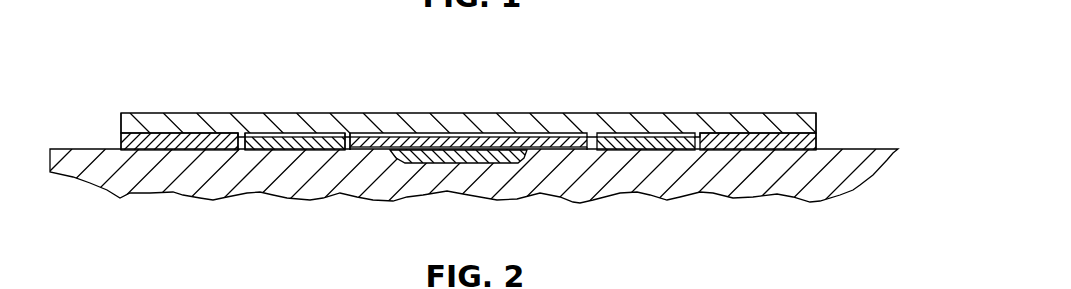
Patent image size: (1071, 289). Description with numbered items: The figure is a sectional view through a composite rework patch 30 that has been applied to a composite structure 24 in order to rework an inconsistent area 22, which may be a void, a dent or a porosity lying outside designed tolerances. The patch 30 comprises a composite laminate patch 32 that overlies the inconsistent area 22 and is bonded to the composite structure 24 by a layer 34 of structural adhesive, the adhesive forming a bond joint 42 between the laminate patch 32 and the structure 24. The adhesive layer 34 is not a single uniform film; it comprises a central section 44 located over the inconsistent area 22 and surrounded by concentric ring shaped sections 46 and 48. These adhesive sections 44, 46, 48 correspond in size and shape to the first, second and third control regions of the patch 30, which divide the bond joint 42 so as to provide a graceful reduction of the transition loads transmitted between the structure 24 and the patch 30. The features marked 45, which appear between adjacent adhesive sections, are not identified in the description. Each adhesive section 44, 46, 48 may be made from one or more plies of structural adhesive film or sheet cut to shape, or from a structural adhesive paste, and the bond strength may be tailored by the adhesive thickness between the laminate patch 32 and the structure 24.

The composite rework patch 30 is at (471, 77).
The composite laminate patch 32 is at (165, 128).
The bond joint 42 is at (119, 132).
The layer of structural adhesive 34 is at (834, 130).
The gaps between leads 45 is at (346, 132).
The central section 44 is at (541, 150).
The ring shaped section 46 is at (645, 145).
The ring shaped section 48 is at (763, 144).
The composite structure 24 is at (137, 173).
The inconsistent area 22 is at (498, 153).